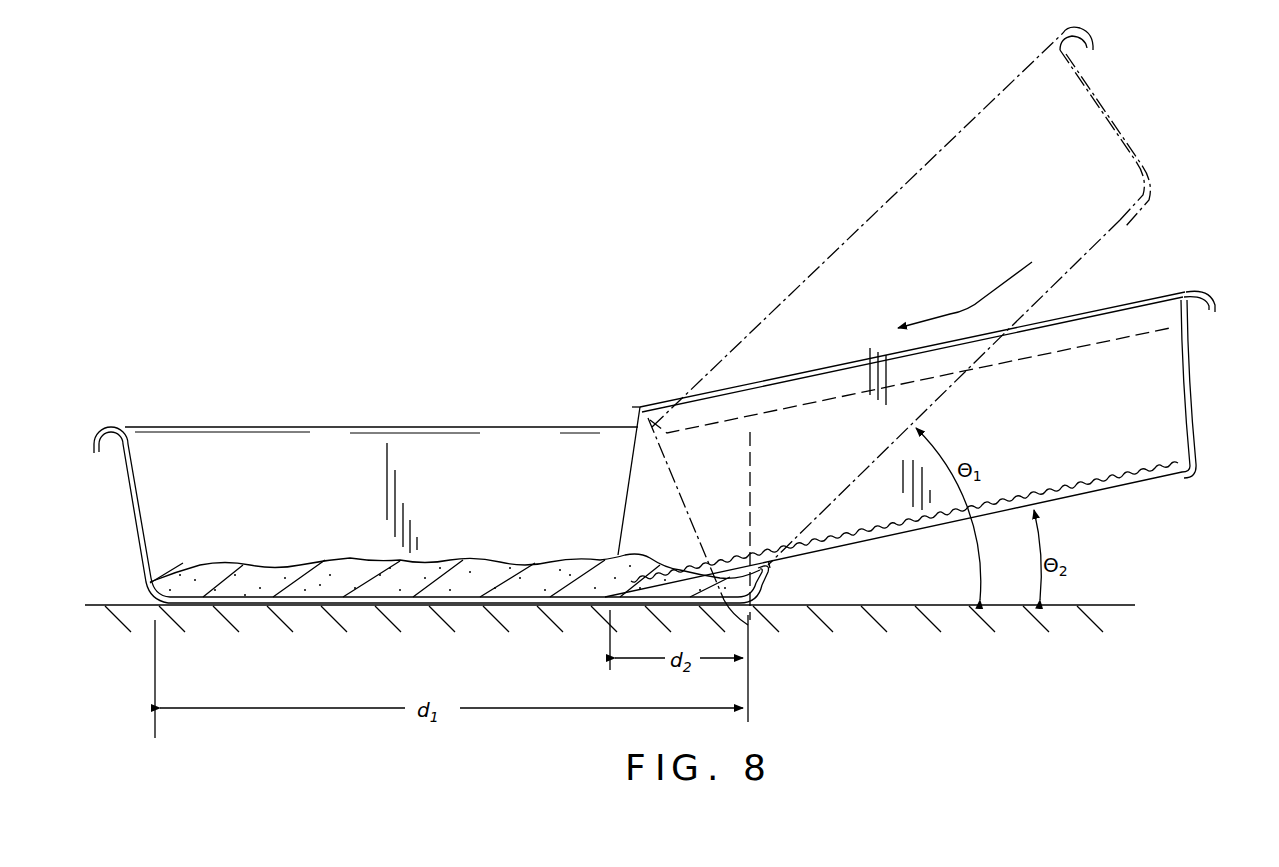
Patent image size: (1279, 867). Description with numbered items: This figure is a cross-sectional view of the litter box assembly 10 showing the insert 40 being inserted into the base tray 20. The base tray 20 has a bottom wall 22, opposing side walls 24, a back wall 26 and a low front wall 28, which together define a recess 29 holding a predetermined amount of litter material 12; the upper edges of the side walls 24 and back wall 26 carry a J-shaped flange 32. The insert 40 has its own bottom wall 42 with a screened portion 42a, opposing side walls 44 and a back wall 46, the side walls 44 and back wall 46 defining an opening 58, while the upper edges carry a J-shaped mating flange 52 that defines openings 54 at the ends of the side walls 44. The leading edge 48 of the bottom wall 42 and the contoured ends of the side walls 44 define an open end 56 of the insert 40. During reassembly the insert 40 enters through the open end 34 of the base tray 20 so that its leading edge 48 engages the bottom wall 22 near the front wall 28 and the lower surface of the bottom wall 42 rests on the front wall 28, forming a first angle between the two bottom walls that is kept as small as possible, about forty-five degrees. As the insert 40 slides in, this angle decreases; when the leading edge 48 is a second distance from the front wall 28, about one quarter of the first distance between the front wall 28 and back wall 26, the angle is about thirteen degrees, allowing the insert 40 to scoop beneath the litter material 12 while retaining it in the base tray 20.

The litter box assembly 10 is at (679, 236).
The litter material 12 is at (356, 570).
The base tray 20 is at (352, 418).
The bottom wall 22 is at (370, 607).
The opposing side walls 24 is at (286, 455).
The back wall 26 is at (127, 520).
The front wall 28 is at (772, 580).
The recess 29 is at (458, 468).
The flange 32 is at (107, 424).
The open end 34 is at (752, 478).
The insert 40 is at (1152, 290).
The bottom wall 42 is at (1160, 476).
The screened portion 42a is at (1092, 470).
The opposing side walls 44 is at (830, 375).
The back wall 46 is at (1194, 375).
The leading edge 48 is at (598, 603).
The mating flange 52 is at (1196, 292).
The openings 54 is at (638, 407).
The open end 56 is at (626, 498).
The opening 58 is at (1077, 368).